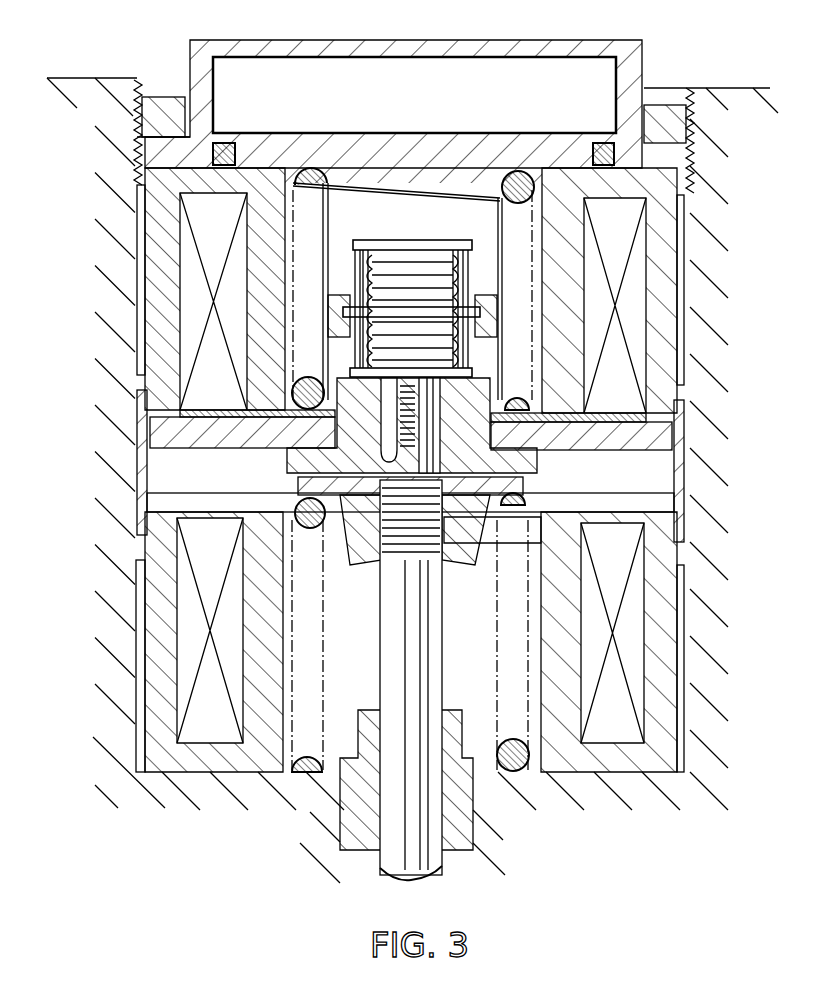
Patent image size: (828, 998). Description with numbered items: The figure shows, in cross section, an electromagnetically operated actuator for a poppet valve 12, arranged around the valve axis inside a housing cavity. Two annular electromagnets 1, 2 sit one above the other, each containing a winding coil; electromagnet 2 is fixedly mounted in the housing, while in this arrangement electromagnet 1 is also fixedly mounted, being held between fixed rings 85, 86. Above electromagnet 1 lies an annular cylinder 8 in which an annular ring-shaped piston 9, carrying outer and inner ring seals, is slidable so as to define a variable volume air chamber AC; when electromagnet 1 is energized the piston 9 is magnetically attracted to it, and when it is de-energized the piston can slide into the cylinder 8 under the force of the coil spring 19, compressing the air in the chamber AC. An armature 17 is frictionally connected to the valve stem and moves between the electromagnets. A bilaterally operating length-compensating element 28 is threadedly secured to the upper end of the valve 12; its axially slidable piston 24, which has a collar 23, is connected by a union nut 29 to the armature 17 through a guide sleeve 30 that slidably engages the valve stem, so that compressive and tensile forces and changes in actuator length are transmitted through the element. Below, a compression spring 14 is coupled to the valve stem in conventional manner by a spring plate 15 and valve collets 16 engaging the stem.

The annular cylinder 8 is at (408, 40).
The air chamber AC is at (516, 80).
The fixed ring 86 is at (672, 105).
The annular ring-shaped piston 9 is at (577, 133).
The annular electromagnet 1 is at (665, 322).
The armature 17 is at (165, 430).
The fixed ring 85 is at (684, 482).
The guide sleeve 30 is at (545, 455).
The union nut 29 is at (342, 292).
The length-compensating element 28 is at (393, 262).
The piston 24 is at (423, 300).
The collar 23 is at (440, 313).
The coil spring 19 is at (300, 378).
The valve collets 16 is at (343, 557).
The spring plate 15 is at (470, 555).
The compression spring 14 is at (513, 735).
The annular electromagnet 2 is at (665, 650).
The poppet valve 12 is at (425, 663).